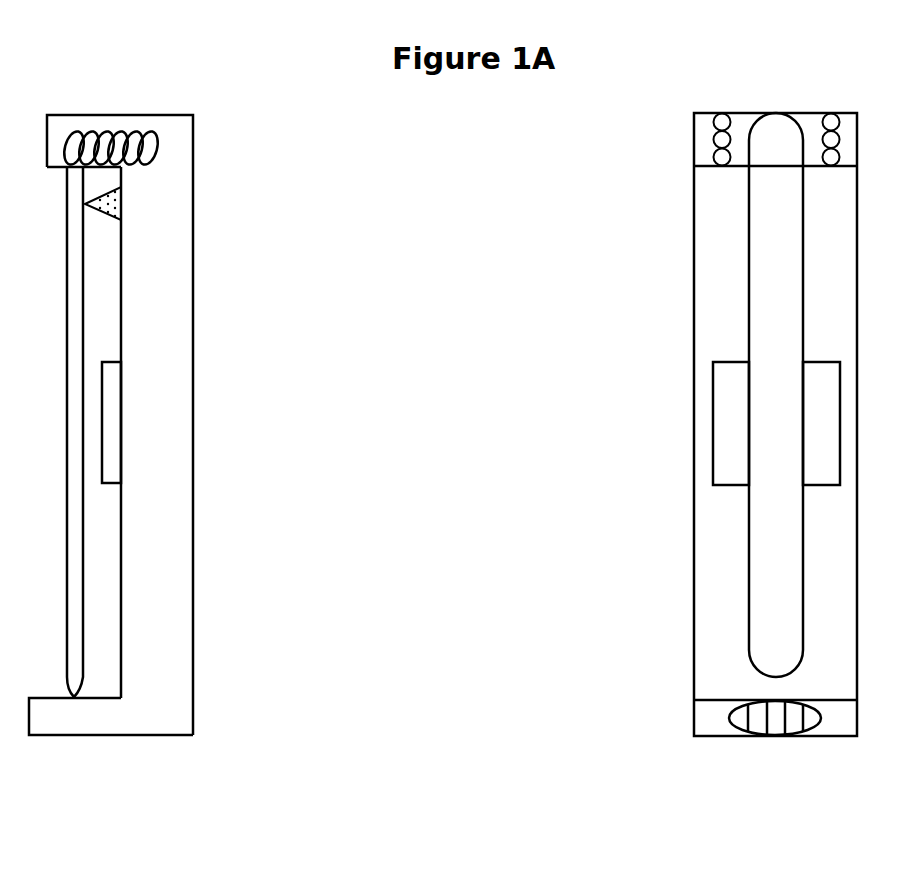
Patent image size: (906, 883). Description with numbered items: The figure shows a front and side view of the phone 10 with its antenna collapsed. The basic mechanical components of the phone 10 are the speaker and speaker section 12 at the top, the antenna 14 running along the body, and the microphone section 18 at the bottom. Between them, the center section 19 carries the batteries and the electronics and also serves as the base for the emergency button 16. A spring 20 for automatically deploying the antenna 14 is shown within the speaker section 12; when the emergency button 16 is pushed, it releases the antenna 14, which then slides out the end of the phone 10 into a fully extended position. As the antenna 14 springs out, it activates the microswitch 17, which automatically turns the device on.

The phone 10 is at (140, 100).
The speaker section 12 is at (679, 150).
The antenna 14 is at (45, 432).
The 911 button 16 is at (713, 415).
The microswitch 17 is at (138, 203).
The microphone section 18 is at (750, 737).
The center section 19 is at (694, 595).
The spring 20 is at (157, 133).